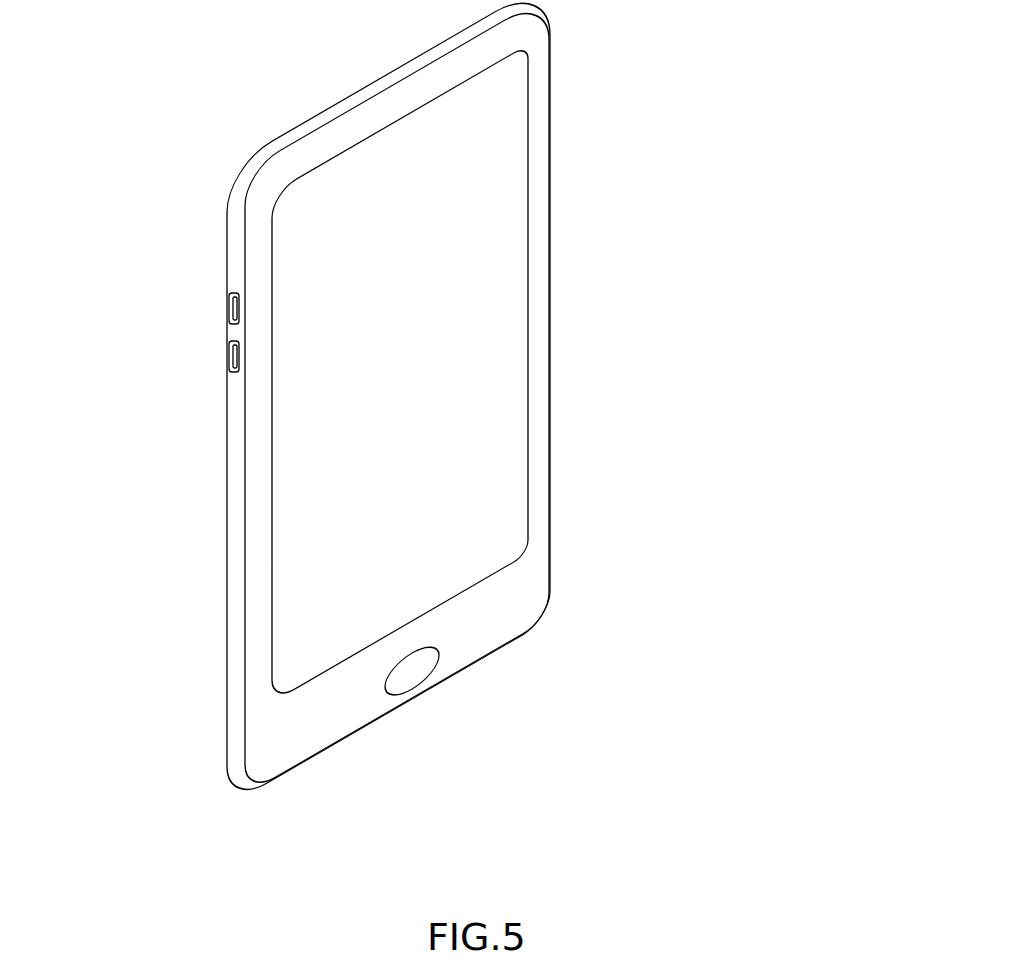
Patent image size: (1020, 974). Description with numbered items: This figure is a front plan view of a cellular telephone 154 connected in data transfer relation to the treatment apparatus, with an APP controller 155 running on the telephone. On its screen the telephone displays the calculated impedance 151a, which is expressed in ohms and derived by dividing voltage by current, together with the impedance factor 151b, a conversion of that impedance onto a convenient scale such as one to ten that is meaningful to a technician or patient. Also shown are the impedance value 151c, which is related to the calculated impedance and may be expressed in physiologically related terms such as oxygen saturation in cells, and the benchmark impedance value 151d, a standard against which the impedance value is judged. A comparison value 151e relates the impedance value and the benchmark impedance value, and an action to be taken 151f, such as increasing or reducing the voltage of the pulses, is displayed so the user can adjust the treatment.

The calculated impedance 151a is at (287, 263).
The impedance factor 151b is at (500, 112).
The impedance value 151c is at (285, 455).
The benchmark impedance value 151d is at (480, 370).
The comparison value 151e is at (298, 617).
The action to be taken 151f is at (487, 535).
The cellular telephone 154 is at (550, 318).
The APP controller 155 is at (483, 217).